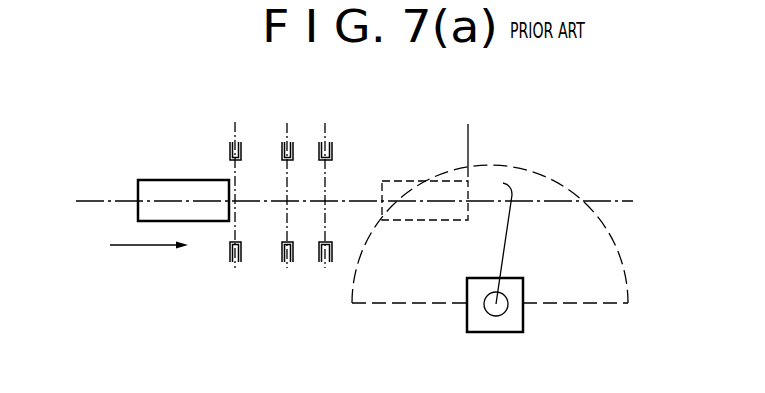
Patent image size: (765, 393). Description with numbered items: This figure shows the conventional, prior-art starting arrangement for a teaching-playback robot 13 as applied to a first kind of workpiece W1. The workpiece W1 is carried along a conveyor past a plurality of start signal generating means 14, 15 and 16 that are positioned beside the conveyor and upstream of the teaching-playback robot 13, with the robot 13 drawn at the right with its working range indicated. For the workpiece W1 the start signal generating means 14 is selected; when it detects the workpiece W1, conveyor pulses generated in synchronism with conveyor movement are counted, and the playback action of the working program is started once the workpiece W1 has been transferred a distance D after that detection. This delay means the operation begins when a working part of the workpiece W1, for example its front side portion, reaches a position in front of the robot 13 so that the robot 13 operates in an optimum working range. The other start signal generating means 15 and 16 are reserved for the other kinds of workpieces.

The workpiece W1 is at (190, 188).
The distance D is at (235, 132).
The teaching-playback robot 13 is at (519, 318).
The start signal generating means 14 is at (228, 262).
The start signal generating means 15 is at (282, 257).
The start signal generating means 16 is at (322, 256).